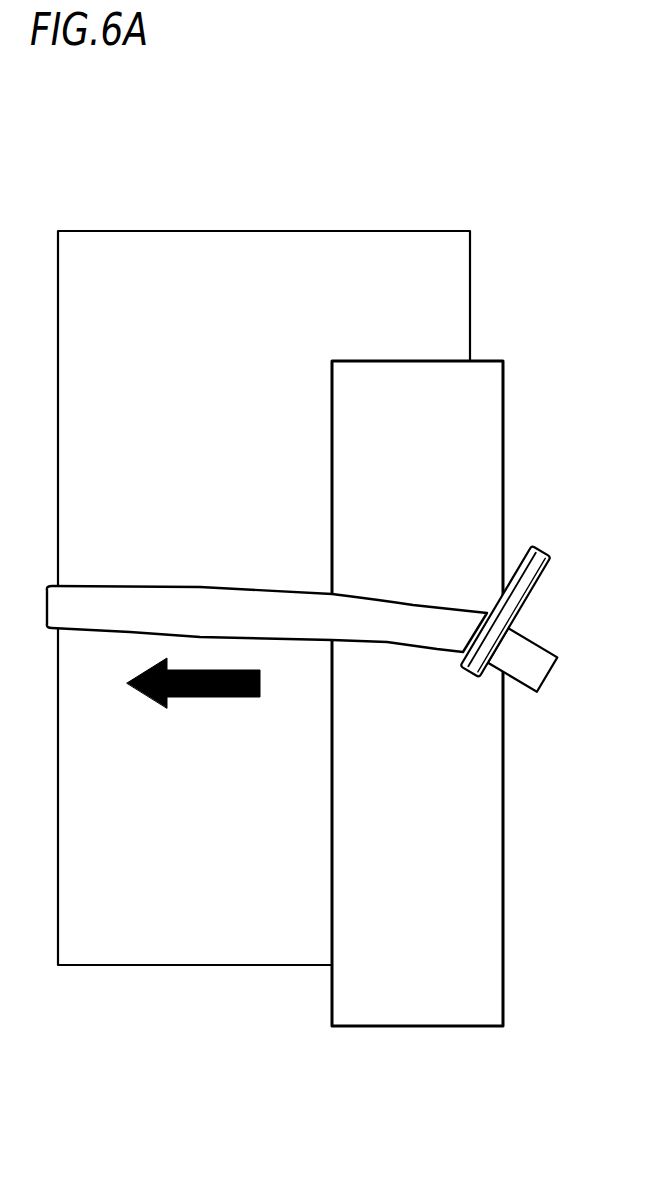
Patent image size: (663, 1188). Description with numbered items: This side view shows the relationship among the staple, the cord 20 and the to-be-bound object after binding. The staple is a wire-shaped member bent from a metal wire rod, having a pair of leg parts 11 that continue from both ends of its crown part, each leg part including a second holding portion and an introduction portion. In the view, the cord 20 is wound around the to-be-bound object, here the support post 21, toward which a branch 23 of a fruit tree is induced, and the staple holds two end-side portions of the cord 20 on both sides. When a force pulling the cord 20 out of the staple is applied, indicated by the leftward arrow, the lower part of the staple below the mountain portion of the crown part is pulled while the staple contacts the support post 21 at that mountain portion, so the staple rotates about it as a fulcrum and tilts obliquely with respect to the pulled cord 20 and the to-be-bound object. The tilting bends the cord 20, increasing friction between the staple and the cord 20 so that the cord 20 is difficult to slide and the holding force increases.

The leg parts 11 is at (541, 616).
The cord 20 is at (202, 587).
The support post 21 is at (505, 430).
The branch 23 is at (470, 280).